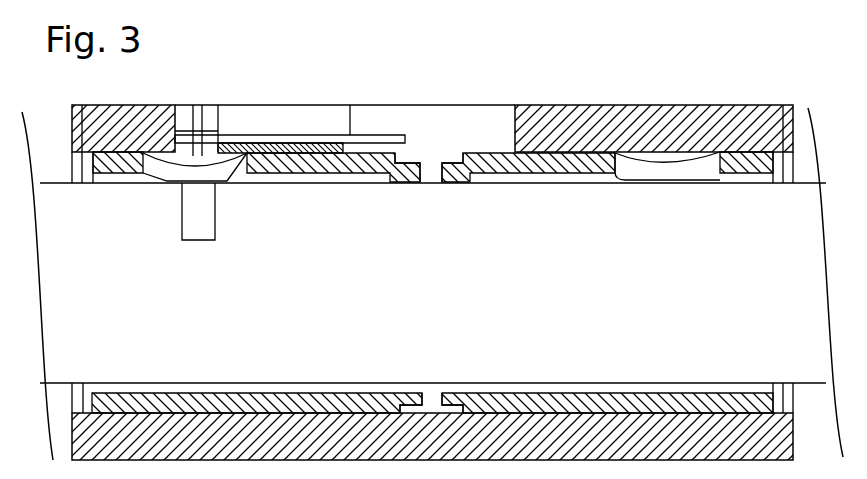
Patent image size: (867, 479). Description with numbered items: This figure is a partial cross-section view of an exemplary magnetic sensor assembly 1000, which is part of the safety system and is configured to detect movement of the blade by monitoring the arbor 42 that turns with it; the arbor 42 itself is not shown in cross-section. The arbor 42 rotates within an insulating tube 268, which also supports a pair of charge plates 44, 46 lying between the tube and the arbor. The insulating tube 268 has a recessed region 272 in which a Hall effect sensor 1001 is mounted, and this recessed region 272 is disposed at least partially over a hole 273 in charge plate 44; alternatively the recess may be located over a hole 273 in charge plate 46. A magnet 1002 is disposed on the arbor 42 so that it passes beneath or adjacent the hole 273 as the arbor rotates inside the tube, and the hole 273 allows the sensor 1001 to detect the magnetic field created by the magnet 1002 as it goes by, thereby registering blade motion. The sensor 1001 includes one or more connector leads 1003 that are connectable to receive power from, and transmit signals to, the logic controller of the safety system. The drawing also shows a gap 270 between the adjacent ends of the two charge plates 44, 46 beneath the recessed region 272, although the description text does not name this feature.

The arbor 42 is at (771, 284).
The charge plate 44 is at (300, 405).
The charge plate 46 is at (585, 402).
The insulating tube 268 is at (620, 115).
The gap 270 is at (453, 116).
The recessed region 272 is at (278, 107).
The hole 273 is at (232, 175).
The magnetic sensor assembly 1000 is at (148, 235).
The Hall effect sensor 1001 is at (207, 92).
The magnet 1002 is at (195, 237).
The connector leads 1003 is at (357, 137).